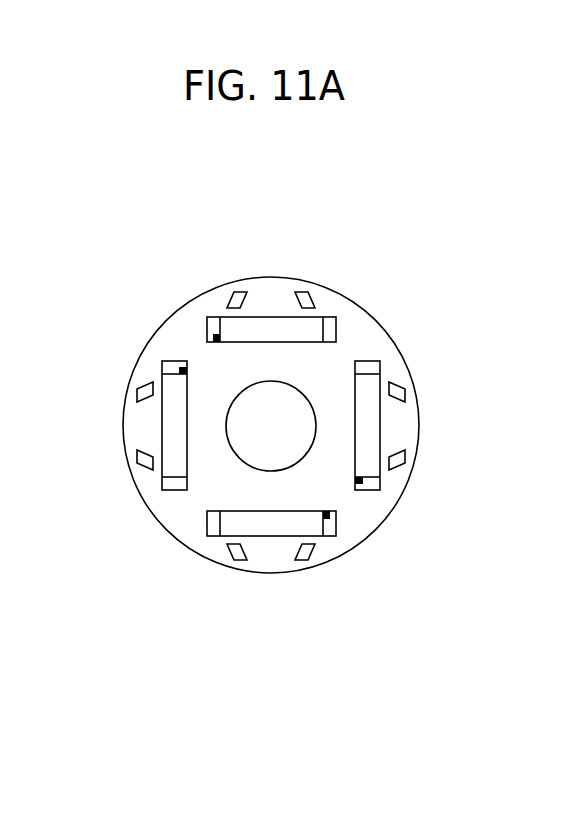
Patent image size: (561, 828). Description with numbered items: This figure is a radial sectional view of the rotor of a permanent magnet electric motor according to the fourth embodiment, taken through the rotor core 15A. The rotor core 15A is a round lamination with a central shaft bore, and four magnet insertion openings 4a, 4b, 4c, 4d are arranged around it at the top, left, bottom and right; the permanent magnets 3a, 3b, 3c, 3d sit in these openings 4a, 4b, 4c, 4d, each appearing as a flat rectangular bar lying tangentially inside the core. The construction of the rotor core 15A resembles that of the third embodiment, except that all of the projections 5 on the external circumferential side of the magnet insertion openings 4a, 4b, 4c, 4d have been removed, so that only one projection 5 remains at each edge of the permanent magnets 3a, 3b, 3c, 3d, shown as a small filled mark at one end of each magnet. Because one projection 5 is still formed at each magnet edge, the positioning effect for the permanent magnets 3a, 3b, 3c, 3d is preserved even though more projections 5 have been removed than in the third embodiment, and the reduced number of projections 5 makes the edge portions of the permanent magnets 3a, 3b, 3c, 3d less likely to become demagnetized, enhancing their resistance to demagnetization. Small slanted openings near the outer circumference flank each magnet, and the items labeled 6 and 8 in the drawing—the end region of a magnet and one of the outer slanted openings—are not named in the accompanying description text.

The rotor core 15A is at (357, 320).
The permanent magnet 3a is at (280, 325).
The permanent magnet 3b is at (172, 423).
The permanent magnet 3c is at (262, 527).
The permanent magnet 3d is at (368, 427).
The magnet insertion opening 4a is at (259, 323).
The magnet insertion opening 4b is at (164, 436).
The magnet insertion opening 4c is at (279, 528).
The magnet insertion opening 4d is at (379, 412).
The projection 5 is at (215, 332).
The bobbin flange 6 is at (333, 335).
The fixing portion 8 is at (310, 306).